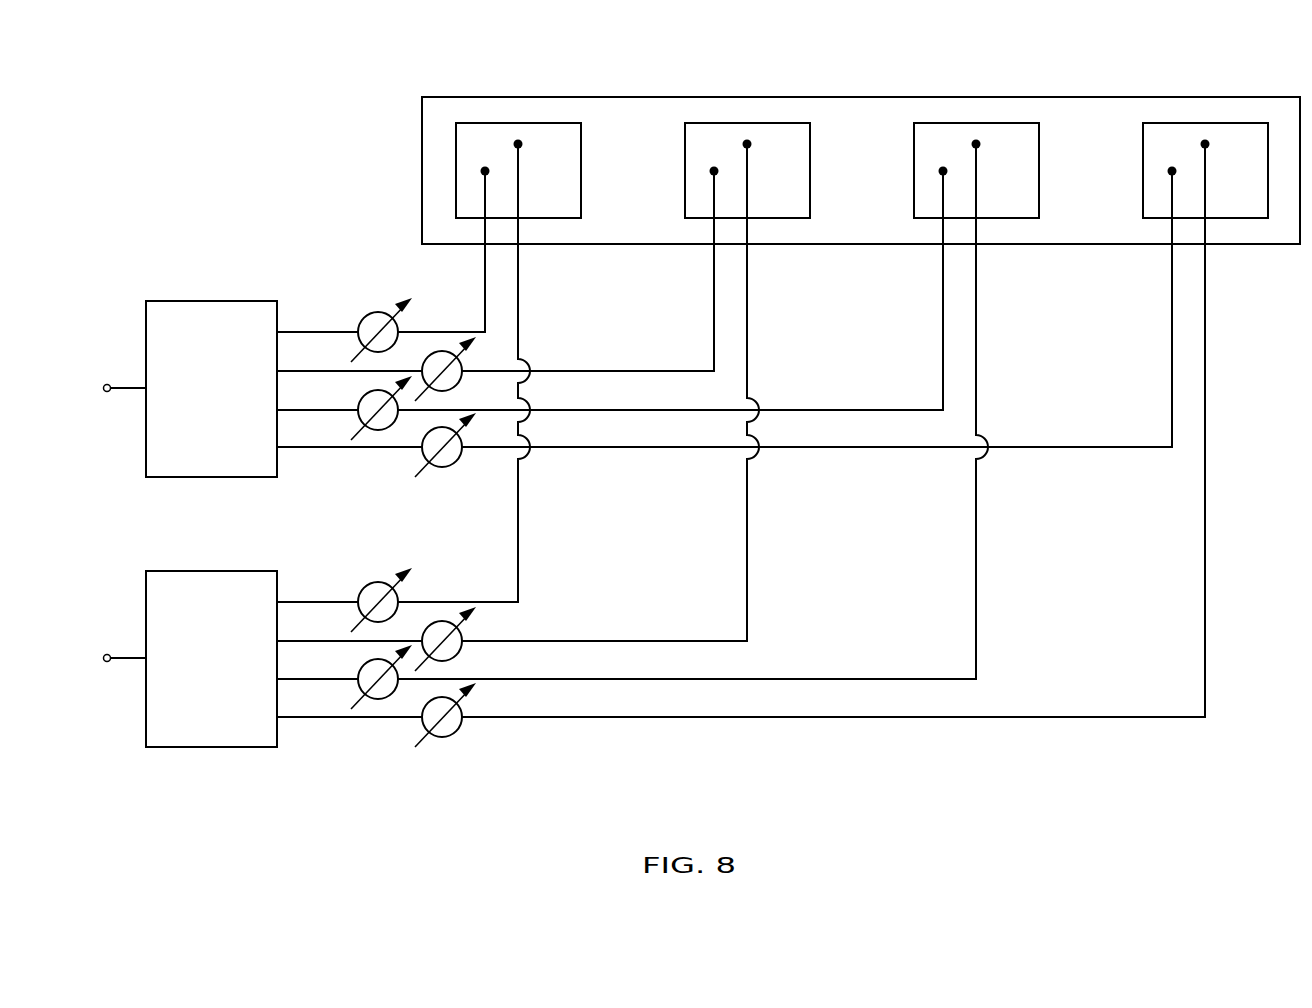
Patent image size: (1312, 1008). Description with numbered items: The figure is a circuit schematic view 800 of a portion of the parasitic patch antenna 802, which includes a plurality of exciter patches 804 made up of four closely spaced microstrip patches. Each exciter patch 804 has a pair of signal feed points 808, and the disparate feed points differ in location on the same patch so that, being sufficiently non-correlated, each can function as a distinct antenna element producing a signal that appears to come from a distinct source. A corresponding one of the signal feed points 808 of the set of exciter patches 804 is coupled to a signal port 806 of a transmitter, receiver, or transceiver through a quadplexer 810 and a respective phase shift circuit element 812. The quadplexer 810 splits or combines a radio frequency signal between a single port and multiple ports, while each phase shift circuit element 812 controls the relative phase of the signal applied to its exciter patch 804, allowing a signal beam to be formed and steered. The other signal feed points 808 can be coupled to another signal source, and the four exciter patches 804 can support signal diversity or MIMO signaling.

The circuit schematic view 800 is at (224, 108).
The parasitic patch antenna 802 is at (862, 97).
The exciter patch 804 is at (550, 218).
The signal port 806 is at (109, 393).
The signal feed point 808 is at (518, 139).
The quadplexer 810 is at (212, 301).
The phase shift circuit element 812 is at (375, 312).